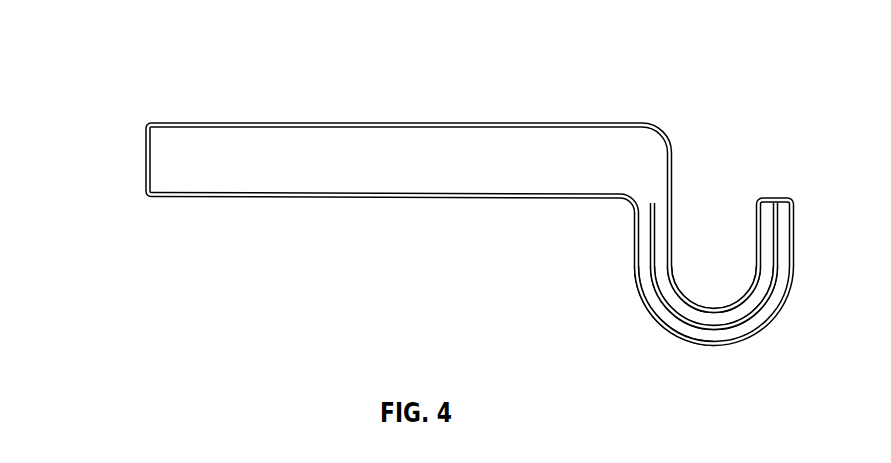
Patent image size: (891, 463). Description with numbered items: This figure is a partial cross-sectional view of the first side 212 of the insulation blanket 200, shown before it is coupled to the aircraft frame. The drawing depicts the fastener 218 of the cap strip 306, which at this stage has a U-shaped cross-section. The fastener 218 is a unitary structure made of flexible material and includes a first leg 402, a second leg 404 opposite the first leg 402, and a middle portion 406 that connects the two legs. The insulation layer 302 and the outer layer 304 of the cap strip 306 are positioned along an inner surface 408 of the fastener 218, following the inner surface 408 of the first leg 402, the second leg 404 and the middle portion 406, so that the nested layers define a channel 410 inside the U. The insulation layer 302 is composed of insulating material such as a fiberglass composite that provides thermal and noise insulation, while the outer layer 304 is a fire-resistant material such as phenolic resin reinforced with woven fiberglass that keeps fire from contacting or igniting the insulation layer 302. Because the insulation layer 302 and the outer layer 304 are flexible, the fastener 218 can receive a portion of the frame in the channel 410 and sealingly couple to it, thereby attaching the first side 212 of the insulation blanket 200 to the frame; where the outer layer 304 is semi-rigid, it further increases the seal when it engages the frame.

The insulation blanket 200 is at (140, 46).
The first side 212 is at (762, 114).
The fastener 218 is at (668, 317).
The insulation layer 302 is at (755, 323).
The outer layer 304 is at (725, 345).
The cap strip 306 is at (635, 316).
The first leg 402 is at (647, 251).
The second leg 404 is at (775, 272).
The middle portion 406 is at (692, 323).
The inner surface 408 is at (684, 305).
The channel 410 is at (718, 222).